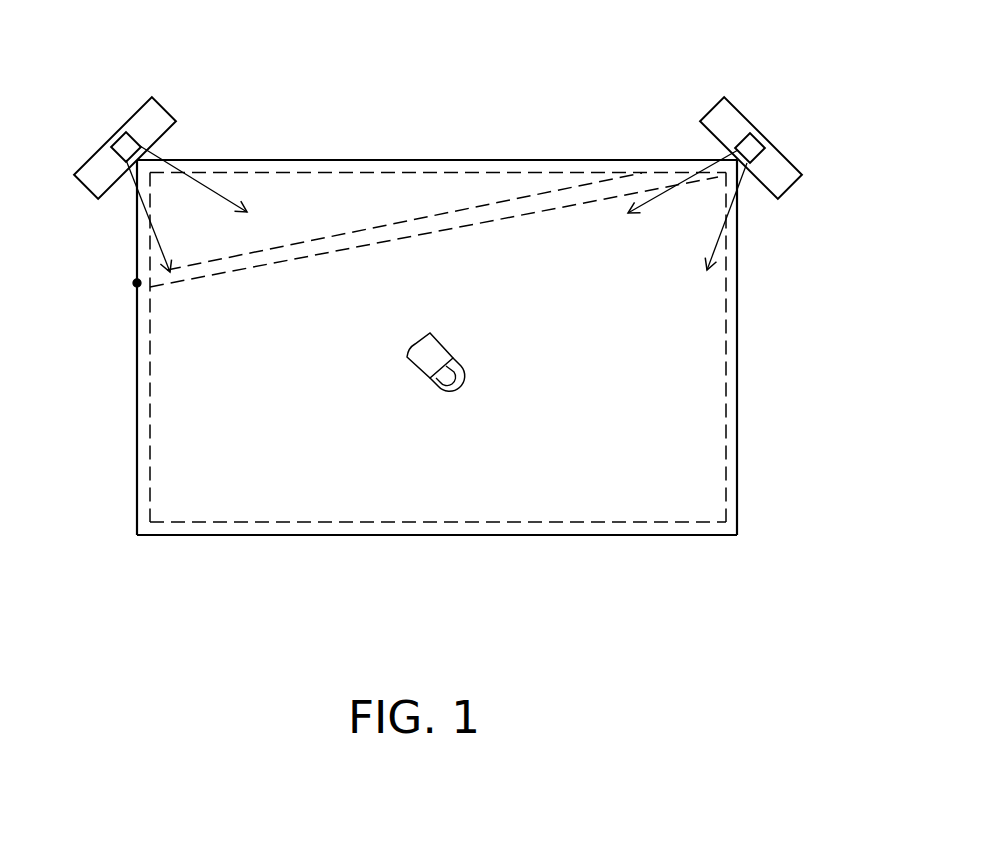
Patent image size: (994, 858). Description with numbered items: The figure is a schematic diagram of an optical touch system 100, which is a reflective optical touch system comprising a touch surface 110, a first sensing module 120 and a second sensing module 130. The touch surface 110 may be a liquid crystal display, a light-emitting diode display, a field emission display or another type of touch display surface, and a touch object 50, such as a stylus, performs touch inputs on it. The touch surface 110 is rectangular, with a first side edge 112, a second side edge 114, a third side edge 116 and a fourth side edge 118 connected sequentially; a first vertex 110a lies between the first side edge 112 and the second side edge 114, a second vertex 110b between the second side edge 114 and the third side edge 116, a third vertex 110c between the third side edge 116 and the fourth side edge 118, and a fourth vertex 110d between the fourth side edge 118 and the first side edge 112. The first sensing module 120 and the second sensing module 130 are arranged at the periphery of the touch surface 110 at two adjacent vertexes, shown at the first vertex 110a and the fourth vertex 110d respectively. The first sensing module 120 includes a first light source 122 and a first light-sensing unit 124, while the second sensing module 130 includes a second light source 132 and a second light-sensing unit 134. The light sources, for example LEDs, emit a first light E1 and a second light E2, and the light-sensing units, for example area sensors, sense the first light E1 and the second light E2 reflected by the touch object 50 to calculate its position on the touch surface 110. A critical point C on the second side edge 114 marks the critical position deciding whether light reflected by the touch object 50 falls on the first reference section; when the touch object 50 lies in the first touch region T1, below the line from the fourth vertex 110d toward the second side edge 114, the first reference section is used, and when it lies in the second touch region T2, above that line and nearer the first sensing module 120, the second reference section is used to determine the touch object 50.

The optical touch system 100 is at (823, 645).
The touch surface 110 is at (437, 306).
The first vertex 110a is at (158, 181).
The second vertex 110b is at (158, 512).
The third vertex 110c is at (717, 513).
The fourth vertex 110d is at (717, 183).
The first side edge 112 is at (378, 158).
The second side edge 114 is at (135, 344).
The third side edge 116 is at (498, 538).
The fourth side edge 118 is at (741, 347).
The first sensing module 120 is at (142, 108).
The first light source 122 is at (142, 51).
The first light-sensing unit 124 is at (145, 122).
The second sensing module 130 is at (734, 109).
The second light source 132 is at (753, 146).
The second light-sensing unit 134 is at (730, 125).
The touch object 50 is at (418, 373).
The critical point C is at (131, 283).
The first light E1 is at (152, 246).
The second light E2 is at (722, 246).
The first touch region T1 is at (148, 436).
The second touch region T2 is at (490, 172).